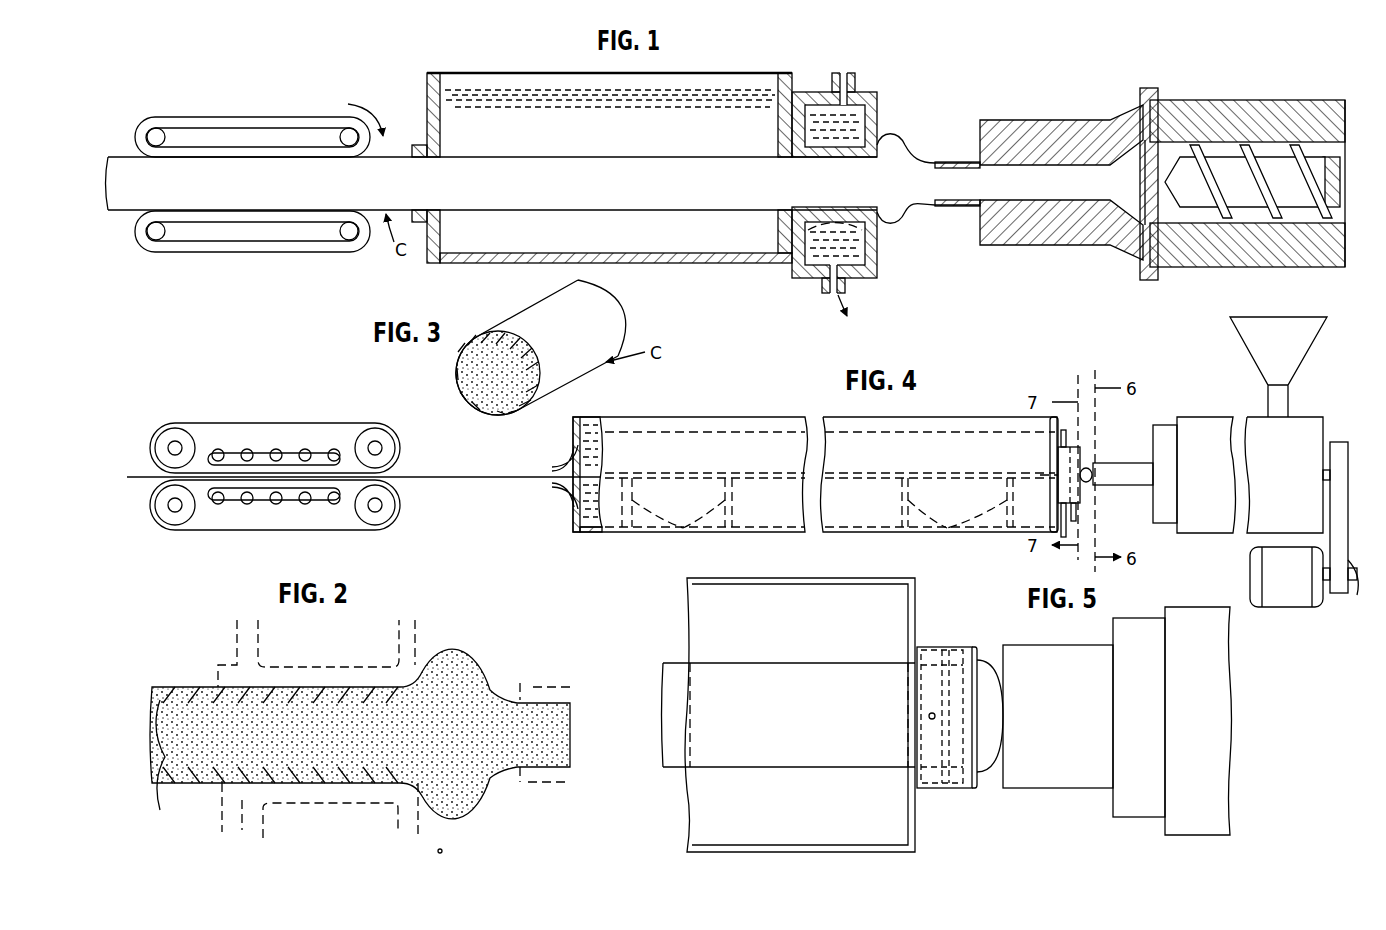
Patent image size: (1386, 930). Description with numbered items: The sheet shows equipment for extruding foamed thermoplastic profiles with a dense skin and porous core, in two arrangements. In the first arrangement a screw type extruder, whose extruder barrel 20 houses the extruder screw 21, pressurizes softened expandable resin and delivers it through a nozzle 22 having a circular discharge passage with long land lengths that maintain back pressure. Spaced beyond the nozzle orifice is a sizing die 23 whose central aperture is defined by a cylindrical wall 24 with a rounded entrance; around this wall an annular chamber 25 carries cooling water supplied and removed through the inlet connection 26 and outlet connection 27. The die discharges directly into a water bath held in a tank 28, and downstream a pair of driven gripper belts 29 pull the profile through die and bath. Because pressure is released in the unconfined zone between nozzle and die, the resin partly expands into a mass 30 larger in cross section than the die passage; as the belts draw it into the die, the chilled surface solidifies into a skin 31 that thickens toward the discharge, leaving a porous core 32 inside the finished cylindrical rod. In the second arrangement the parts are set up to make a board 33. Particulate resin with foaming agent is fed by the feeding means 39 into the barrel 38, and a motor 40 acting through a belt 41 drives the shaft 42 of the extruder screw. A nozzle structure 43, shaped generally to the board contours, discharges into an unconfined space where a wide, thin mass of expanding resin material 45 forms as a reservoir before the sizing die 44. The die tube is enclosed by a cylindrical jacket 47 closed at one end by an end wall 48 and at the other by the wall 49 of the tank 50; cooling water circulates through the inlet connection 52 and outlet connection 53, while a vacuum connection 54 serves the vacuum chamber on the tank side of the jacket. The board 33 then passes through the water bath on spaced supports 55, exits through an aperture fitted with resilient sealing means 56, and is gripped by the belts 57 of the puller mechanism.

In FIG. 1, the extruder barrel 20 is at (1193, 100).
In FIG. 1, the extruder screw 21 is at (1265, 145).
In FIG. 1, the nozzle 22 is at (1045, 120).
In FIG. 2, the nozzle 22 is at (550, 687).
In FIG. 1, the sizing die 23 is at (882, 108).
In FIG. 2, the sizing die 23 is at (417, 640).
In FIG. 1, the cylindrical wall 24 is at (800, 258).
In FIG. 2, the cylindrical wall 24 is at (300, 675).
In FIG. 1, the annular chamber 25 is at (858, 237).
In FIG. 2, the annular chamber 25 is at (268, 826).
In FIG. 1, the inlet connection 26 is at (831, 80).
In FIG. 1, the outlet connection 27 is at (852, 283).
In FIG. 1, the tank 28 is at (426, 92).
In FIG. 1, the gripper belts 29 is at (235, 116).
In FIG. 1, the mass 30 is at (907, 143).
In FIG. 2, the mass 30 is at (489, 660).
In FIG. 3, the solidified skin 31 is at (457, 372).
In FIG. 2, the solidified skin 31 is at (210, 693).
In FIG. 3, the porous core 32 is at (508, 380).
In FIG. 2, the porous core 32 is at (164, 765).
In FIG. 4, the board 33 is at (943, 470).
In FIG. 5, the board 33 is at (672, 659).
In FIG. 4, the barrel 38 is at (1230, 417).
In FIG. 5, the barrel 38 is at (1205, 810).
In FIG. 4, the feeding means 39 is at (1233, 333).
In FIG. 4, the motor 40 is at (1268, 600).
In FIG. 4, the belt 41 is at (1357, 582).
In FIG. 4, the shaft 42 is at (1357, 482).
In FIG. 4, the nozzle structure 43 is at (1130, 488).
In FIG. 5, the nozzle structure 43 is at (1055, 790).
In FIG. 4, the sizing die 44 is at (1083, 458).
In FIG. 5, the sizing die 44 is at (940, 647).
In FIG. 4, the mass of expanding resin material 45 is at (1088, 481).
In FIG. 5, the mass of expanding resin material 45 is at (995, 773).
In FIG. 5, the cylindrical jacket 47 is at (936, 790).
In FIG. 5, the end wall 48 is at (976, 655).
In FIG. 4, the tank wall 49 is at (900, 532).
In FIG. 5, the tank wall 49 is at (915, 833).
In FIG. 5, the tank 50 is at (700, 845).
In FIG. 4, the inlet connection 52 is at (1066, 436).
In FIG. 4, the outlet connection 53 is at (1067, 528).
In FIG. 4, the vacuum connection 54 is at (1077, 512).
In FIG. 4, the supports 55 is at (819, 529).
In FIG. 4, the resilient sealing means 56 is at (562, 488).
In FIG. 4, the puller belts 57 is at (280, 425).